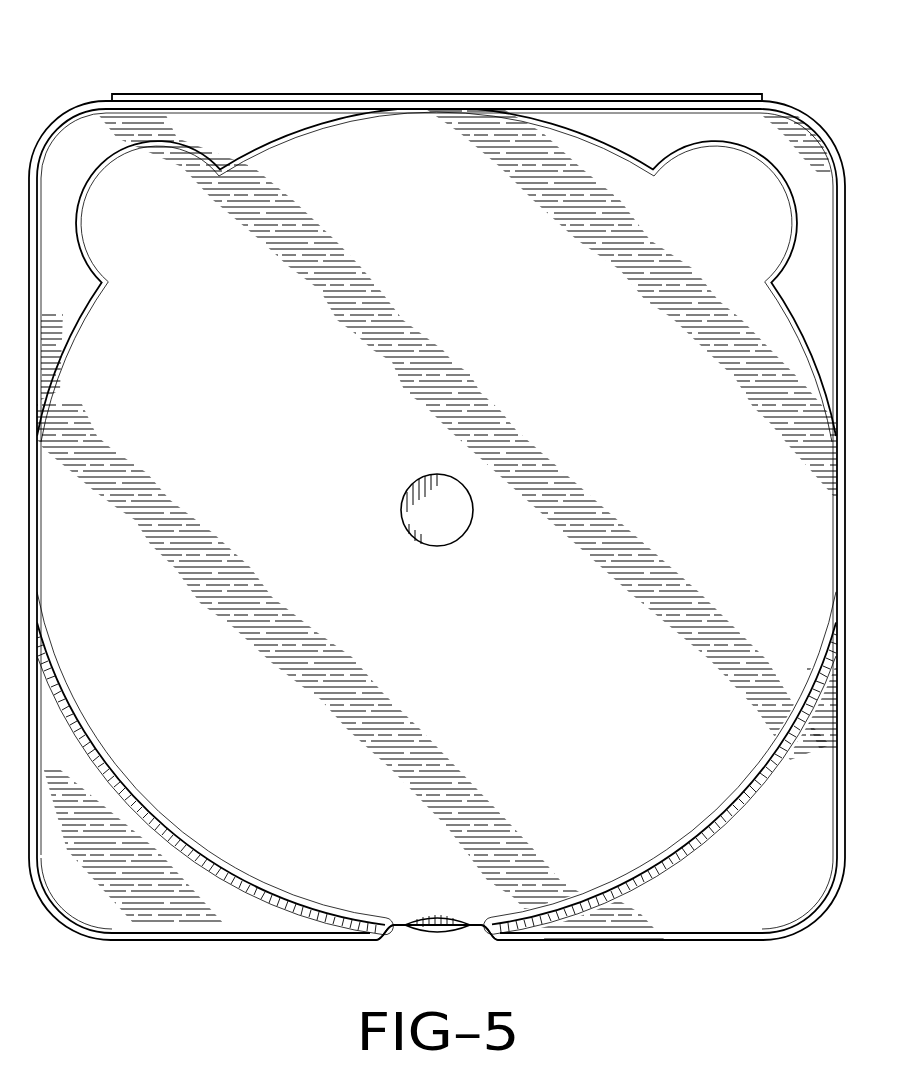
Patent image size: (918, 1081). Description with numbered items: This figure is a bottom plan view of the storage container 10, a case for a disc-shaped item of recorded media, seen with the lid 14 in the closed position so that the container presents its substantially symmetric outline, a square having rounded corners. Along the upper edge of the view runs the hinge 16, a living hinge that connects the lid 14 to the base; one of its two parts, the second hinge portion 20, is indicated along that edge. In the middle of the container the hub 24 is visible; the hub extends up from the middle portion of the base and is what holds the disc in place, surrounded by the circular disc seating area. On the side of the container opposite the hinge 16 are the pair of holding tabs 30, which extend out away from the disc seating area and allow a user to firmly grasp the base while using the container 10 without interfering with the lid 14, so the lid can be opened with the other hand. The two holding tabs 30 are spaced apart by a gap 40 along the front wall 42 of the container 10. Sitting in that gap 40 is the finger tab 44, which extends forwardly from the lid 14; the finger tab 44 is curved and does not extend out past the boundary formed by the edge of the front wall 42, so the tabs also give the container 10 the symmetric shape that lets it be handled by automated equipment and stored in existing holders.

The storage container 10 is at (595, 59).
The lid 14 is at (323, 159).
The hinge 16 is at (422, 80).
The second hinge portion 20 is at (490, 97).
The hub 24 is at (451, 527).
The holding tabs 30 is at (93, 906).
The gap 40 is at (478, 934).
The front wall 42 is at (228, 953).
The finger tab 44 is at (433, 934).